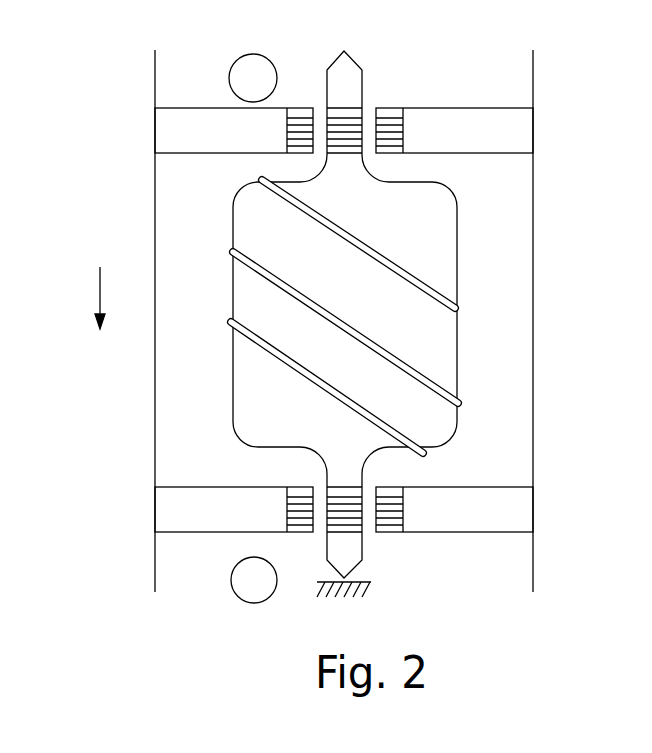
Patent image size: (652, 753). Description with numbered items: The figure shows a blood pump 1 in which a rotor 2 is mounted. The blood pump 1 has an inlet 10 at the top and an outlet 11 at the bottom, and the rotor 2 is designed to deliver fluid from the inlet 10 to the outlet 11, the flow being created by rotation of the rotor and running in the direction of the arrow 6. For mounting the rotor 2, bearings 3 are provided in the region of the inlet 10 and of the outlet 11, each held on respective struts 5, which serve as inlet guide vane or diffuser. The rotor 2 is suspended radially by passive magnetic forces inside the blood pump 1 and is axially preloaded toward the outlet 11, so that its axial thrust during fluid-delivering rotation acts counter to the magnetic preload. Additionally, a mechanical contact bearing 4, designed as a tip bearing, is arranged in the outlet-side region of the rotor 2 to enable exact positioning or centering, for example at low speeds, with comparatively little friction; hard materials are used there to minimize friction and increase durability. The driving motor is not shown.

The blood pump 1 is at (563, 342).
The rotor 2 is at (435, 337).
The bearings 3 is at (372, 97).
The contact bearing 4 is at (332, 587).
The struts 5 is at (517, 132).
The arrow 6 is at (100, 292).
The inlet 10 is at (253, 78).
The outlet 11 is at (254, 580).